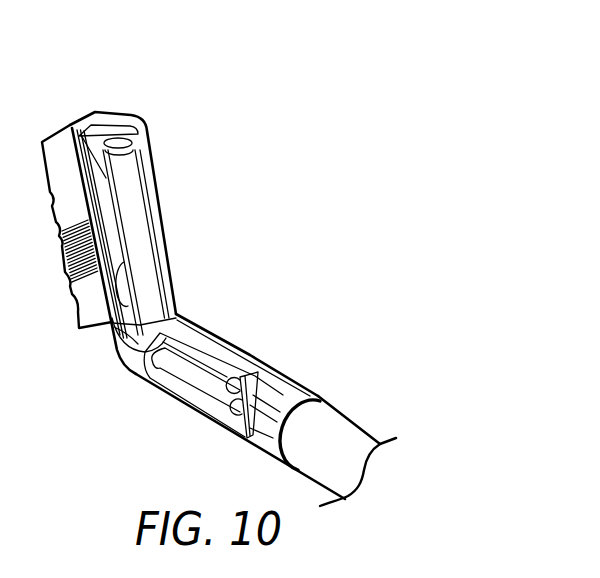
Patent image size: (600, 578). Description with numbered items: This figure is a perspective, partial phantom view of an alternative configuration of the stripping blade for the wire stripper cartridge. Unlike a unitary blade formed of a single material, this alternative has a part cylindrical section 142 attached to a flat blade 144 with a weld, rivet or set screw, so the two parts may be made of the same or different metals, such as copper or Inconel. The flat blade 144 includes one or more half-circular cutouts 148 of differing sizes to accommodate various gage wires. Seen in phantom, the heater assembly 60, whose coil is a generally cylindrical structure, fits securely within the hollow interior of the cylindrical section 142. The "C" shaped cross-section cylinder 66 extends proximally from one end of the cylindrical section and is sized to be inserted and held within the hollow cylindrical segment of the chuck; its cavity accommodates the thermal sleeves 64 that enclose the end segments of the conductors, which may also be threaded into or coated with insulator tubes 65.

The heater assembly 60 is at (142, 252).
The thermal sleeves 64 is at (211, 363).
The insulator tubes 65 is at (276, 404).
The "C" shaped cross-section cylinder 66 is at (185, 395).
The part cylindrical section 142 is at (157, 205).
The flat blade 144 is at (55, 134).
The half-circular cutouts 148 is at (68, 288).